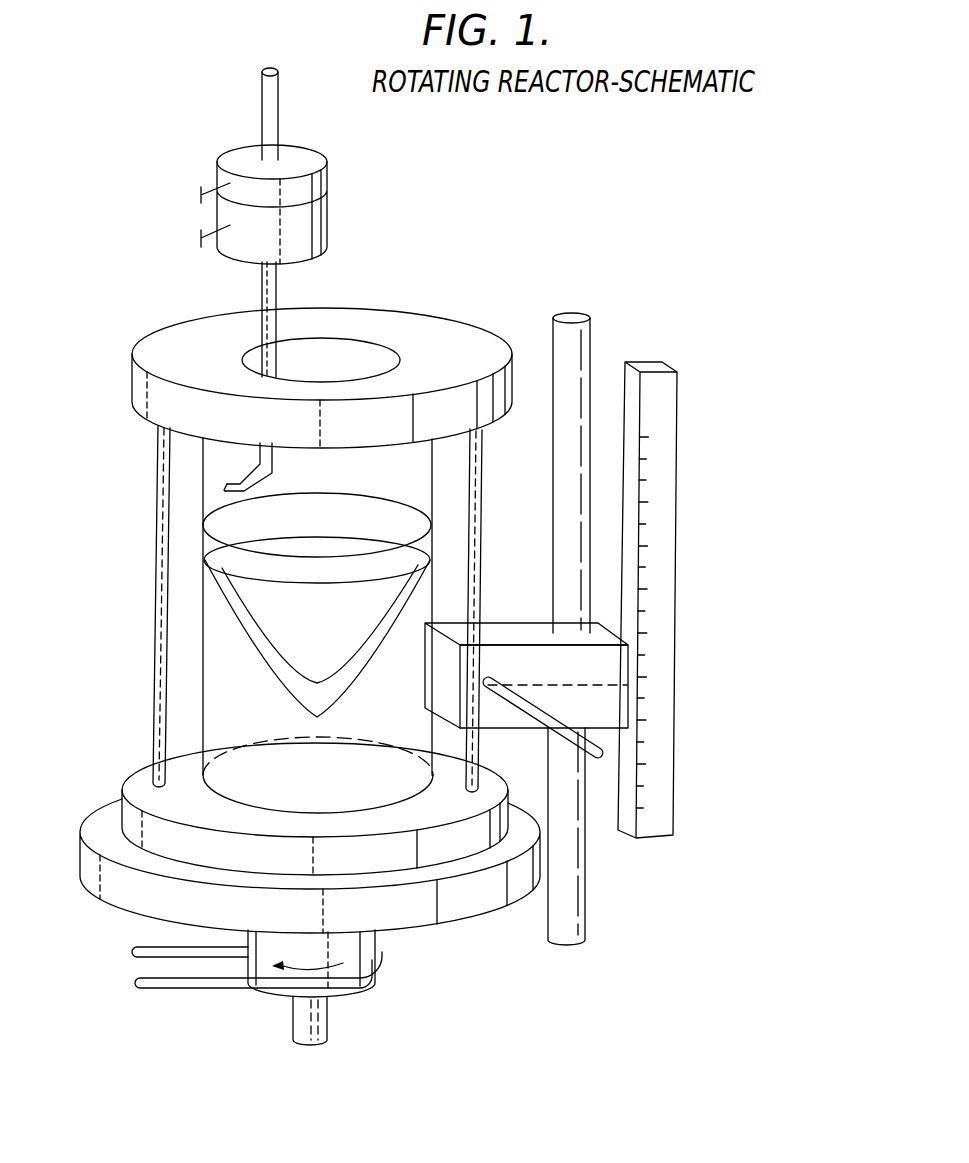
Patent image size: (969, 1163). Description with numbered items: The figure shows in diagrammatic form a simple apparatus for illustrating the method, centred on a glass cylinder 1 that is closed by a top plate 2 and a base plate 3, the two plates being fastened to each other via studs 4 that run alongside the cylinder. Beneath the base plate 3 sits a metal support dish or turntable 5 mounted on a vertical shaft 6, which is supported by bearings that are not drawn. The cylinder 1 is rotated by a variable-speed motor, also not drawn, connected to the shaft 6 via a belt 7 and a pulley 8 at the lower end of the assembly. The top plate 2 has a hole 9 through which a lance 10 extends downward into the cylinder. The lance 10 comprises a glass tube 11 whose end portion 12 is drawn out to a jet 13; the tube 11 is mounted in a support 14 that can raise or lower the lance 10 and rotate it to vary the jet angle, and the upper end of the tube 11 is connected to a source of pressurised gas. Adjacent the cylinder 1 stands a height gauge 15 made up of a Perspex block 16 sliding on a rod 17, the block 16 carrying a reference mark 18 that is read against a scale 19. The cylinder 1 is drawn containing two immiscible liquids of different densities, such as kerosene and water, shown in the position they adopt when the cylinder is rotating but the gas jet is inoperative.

The glass cylinder 1 is at (202, 680).
The top plate 2 is at (140, 388).
The base plate 3 is at (132, 813).
The studs 4 is at (158, 555).
The metal support dish or turntable 5 is at (110, 888).
The vertical shaft 6 is at (317, 1022).
The belt 7 is at (165, 985).
The pulley 8 is at (348, 948).
The hole 9 is at (357, 357).
The lance 10 is at (282, 287).
The glass tube 11 is at (262, 318).
The end portion 12 is at (237, 478).
The jet 13 is at (225, 488).
The support 14 is at (204, 214).
The height gauge 15 is at (632, 662).
The Perspex block 16 is at (620, 705).
The rod 17 is at (560, 546).
The reference mark 18 is at (562, 680).
The scale 19 is at (640, 742).